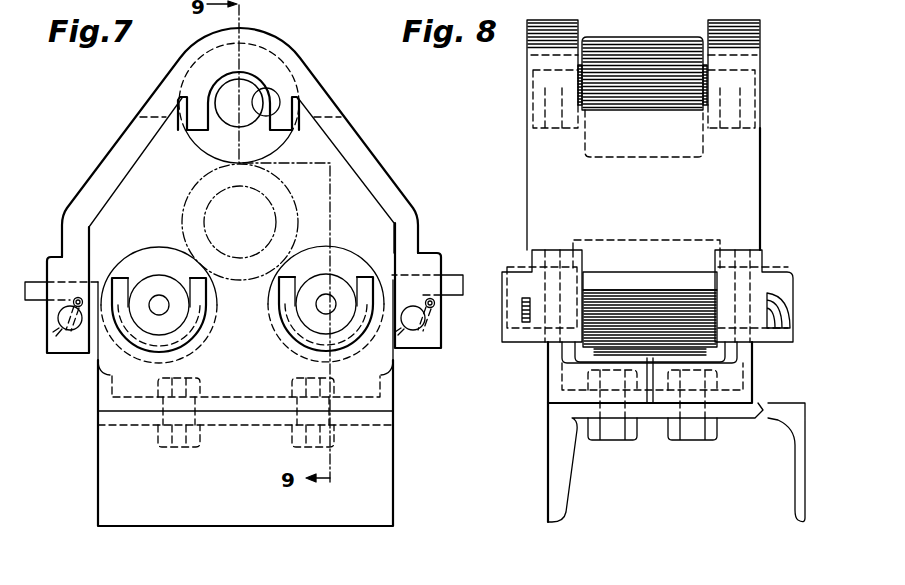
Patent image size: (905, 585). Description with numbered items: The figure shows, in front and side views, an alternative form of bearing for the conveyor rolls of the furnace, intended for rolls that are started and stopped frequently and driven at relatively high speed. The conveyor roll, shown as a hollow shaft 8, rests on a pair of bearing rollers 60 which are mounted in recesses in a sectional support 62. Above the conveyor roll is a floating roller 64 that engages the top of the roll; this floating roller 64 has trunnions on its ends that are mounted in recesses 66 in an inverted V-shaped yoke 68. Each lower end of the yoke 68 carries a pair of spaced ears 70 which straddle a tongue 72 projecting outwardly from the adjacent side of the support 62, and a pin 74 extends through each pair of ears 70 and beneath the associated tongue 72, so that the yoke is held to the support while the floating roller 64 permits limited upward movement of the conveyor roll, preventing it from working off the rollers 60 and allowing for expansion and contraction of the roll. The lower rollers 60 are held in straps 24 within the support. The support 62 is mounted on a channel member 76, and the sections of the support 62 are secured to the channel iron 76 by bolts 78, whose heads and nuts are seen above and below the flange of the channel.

In FIG. 7, the hollow shaft 8 is at (298, 214).
In FIG. 7, the roller strap 24 is at (112, 264).
In FIG. 7, the bearing rollers 60 is at (158, 258).
In FIG. 8, the bearing rollers 60 is at (633, 338).
In FIG. 7, the sectional support 62 is at (98, 371).
In FIG. 8, the sectional support 62 is at (552, 378).
In FIG. 7, the floating roller 64 is at (201, 141).
In FIG. 8, the floating roller 64 is at (652, 50).
In FIG. 7, the recesses 66 is at (284, 127).
In FIG. 8, the recesses 66 is at (545, 72).
In FIG. 7, the inverted V-shaped yoke 68 is at (366, 147).
In FIG. 8, the inverted V-shaped yoke 68 is at (545, 153).
In FIG. 7, the spaced ears 70 is at (60, 355).
In FIG. 8, the spaced ears 70 is at (553, 262).
In FIG. 7, the tongue 72 is at (37, 281).
In FIG. 8, the tongue 72 is at (660, 278).
In FIG. 7, the pin 74 is at (57, 318).
In FIG. 8, the pin 74 is at (676, 305).
In FIG. 7, the channel member 76 is at (393, 478).
In FIG. 8, the channel member 76 is at (562, 476).
In FIG. 7, the bolts 78 is at (298, 378).
In FIG. 8, the bolts 78 is at (690, 432).